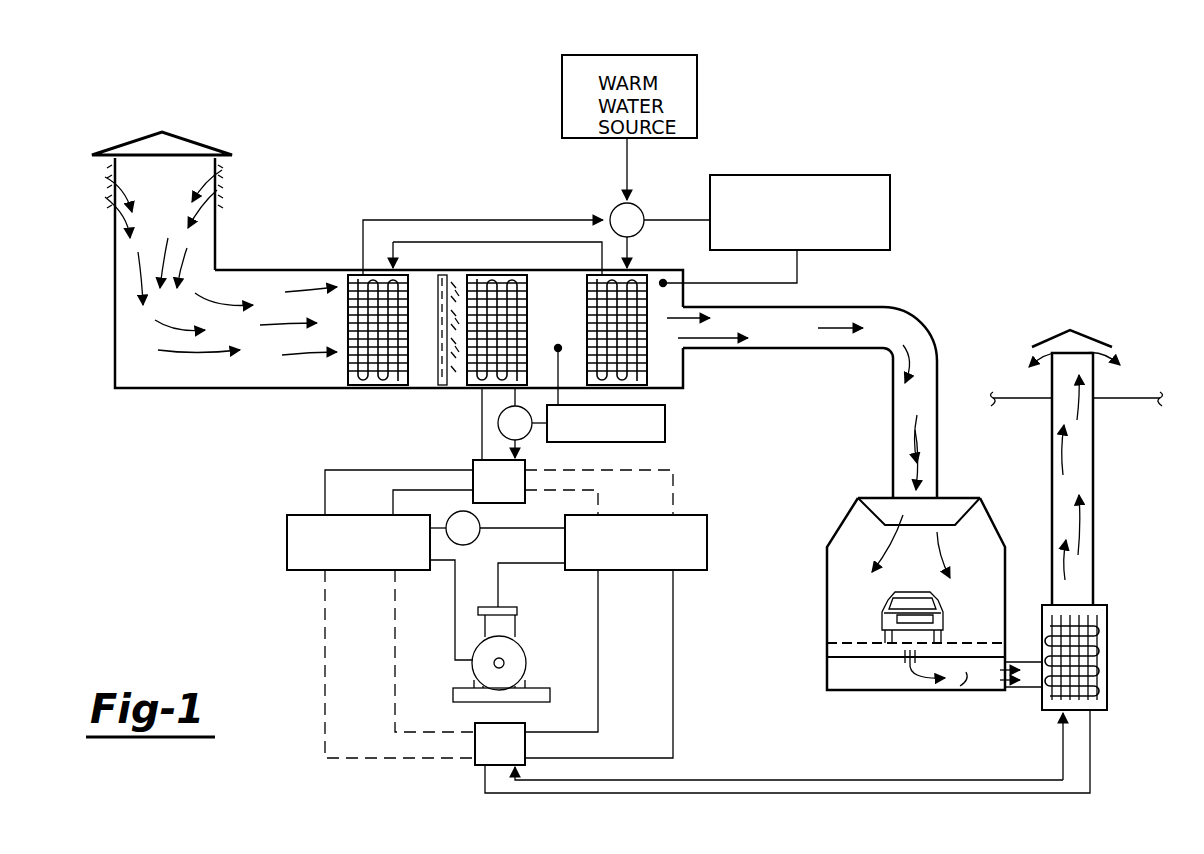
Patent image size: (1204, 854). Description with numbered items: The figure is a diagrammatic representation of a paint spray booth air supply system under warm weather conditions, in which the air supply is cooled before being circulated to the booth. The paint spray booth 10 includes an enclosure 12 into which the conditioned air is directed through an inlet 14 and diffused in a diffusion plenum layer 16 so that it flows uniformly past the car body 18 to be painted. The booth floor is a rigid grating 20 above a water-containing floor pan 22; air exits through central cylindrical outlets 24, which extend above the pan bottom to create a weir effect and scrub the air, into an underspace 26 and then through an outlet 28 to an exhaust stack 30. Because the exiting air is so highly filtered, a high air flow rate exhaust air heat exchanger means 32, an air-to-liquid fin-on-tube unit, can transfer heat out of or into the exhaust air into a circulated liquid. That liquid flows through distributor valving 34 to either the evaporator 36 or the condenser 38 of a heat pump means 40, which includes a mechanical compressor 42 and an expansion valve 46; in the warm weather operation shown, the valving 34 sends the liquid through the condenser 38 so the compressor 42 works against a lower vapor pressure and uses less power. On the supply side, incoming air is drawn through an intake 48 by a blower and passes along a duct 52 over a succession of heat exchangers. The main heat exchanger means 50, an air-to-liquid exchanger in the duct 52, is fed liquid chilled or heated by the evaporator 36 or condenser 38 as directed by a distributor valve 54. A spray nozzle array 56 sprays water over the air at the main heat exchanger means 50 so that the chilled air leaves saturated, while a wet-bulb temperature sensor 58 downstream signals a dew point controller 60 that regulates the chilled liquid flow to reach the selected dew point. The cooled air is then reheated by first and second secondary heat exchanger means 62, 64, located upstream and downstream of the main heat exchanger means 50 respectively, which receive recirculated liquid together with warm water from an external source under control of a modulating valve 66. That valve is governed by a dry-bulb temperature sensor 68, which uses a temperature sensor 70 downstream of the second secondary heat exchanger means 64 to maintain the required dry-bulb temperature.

The paint spray booth 10 is at (893, 584).
The enclosure 12 is at (842, 609).
The inlet 14 is at (930, 378).
The diffusion plenum layer 16 is at (870, 517).
The car body 18 is at (943, 607).
The rigid grating 20 is at (847, 643).
The floor pan 22 is at (835, 655).
The central cylindrical outlets 24 is at (905, 665).
The underspace 26 is at (965, 682).
The outlet 28 is at (1032, 678).
The exhaust stack 30 is at (1093, 452).
The exhaust air heat exchanger means 32 is at (1110, 668).
The distributor valving 34 is at (475, 760).
The evaporator 36 is at (287, 548).
The condenser 38 is at (708, 530).
The heat pump means 40 is at (507, 631).
The mechanical compressor 42 is at (525, 660).
The expansion valve 46 is at (478, 538).
The intake 48 is at (218, 183).
The main heat exchanger means 50 is at (508, 266).
The duct 52 is at (268, 282).
The distributor valve 54 is at (473, 462).
The spray nozzle array 56 is at (437, 270).
The wet-bulb temperature sensor 58 is at (560, 346).
The dew point controller 60 is at (667, 418).
The first secondary heat exchanger means 62 is at (358, 272).
The second secondary heat exchanger means 64 is at (640, 272).
The modulating valve 66 is at (640, 205).
The dry-bulb temperature sensor 68 is at (822, 175).
The temperature sensor 70 is at (684, 270).